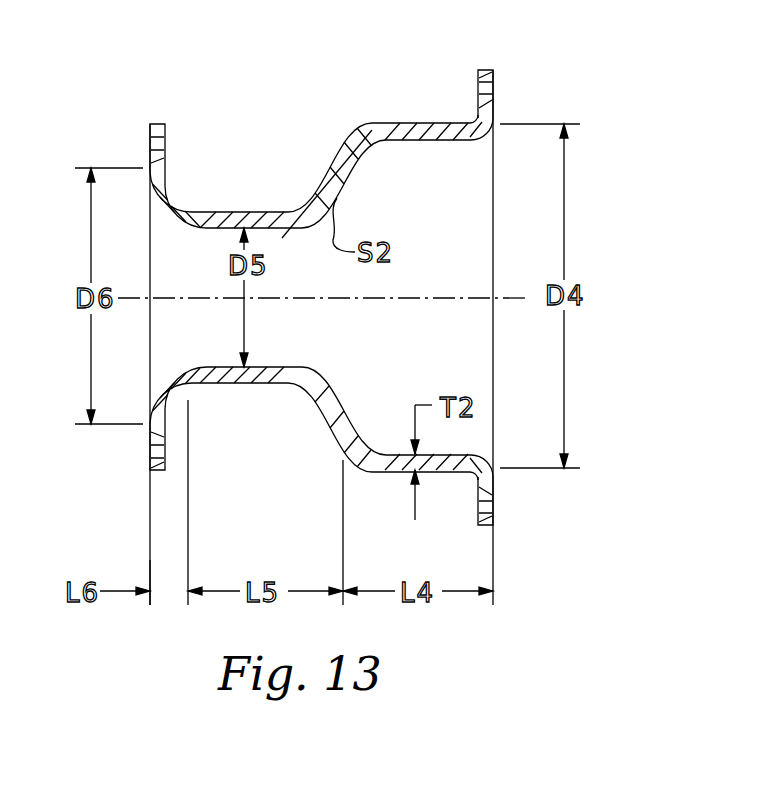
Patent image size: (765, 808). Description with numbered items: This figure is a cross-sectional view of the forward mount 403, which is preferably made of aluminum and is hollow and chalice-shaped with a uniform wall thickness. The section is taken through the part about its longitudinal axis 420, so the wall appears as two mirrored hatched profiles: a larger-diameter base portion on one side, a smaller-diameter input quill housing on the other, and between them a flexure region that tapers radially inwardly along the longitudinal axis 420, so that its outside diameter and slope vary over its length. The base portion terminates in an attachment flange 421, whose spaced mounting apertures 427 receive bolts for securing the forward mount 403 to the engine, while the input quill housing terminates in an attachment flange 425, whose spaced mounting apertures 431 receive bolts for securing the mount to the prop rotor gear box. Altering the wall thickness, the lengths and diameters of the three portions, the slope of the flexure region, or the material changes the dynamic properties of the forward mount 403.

The forward mount 403 is at (303, 58).
The attachment flange 421 is at (491, 68).
The attachment flange 425 is at (153, 122).
The longitudinal axis 420 is at (517, 293).
The mounting apertures 431 is at (152, 450).
The mounting apertures 427 is at (494, 505).